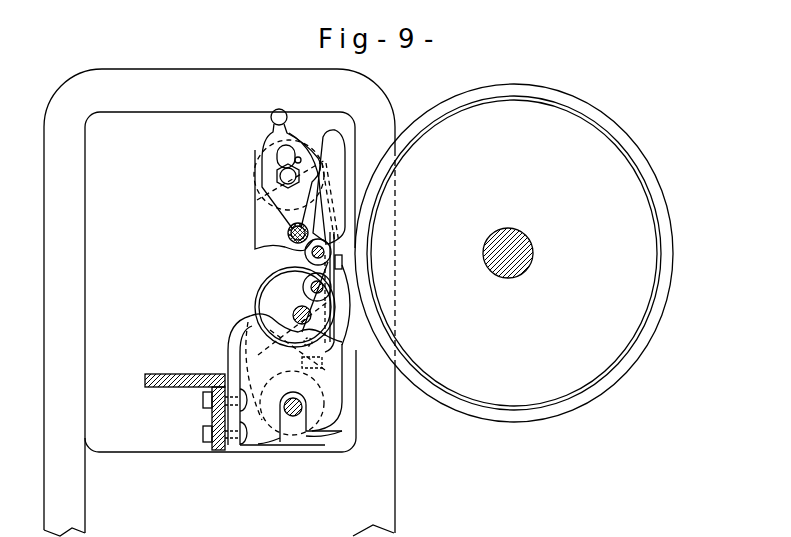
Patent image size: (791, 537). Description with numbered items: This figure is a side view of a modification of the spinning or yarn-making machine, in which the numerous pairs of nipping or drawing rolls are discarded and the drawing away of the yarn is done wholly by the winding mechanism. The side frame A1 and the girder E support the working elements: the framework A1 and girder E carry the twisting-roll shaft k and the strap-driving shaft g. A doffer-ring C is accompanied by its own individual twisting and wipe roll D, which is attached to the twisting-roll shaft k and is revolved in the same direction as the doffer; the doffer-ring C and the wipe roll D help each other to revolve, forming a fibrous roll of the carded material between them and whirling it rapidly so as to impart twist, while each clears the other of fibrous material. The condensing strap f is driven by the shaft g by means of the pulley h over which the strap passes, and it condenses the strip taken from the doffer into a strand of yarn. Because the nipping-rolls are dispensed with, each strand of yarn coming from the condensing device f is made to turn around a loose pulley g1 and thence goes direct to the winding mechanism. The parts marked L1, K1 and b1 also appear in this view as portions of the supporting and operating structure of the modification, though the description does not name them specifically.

The side frame A1 is at (219, 302).
The doffer-ring C is at (628, 146).
The twisting and wipe roll D is at (278, 280).
The girder E is at (196, 412).
The lever L1 is at (258, 170).
The casing K1 is at (275, 358).
The loose pulley g1 is at (322, 260).
The roller pin b1 is at (322, 272).
The twisting-roll shaft k is at (296, 314).
The condensing strap f is at (337, 332).
The pulley h is at (315, 434).
The strap-driving shaft g is at (293, 413).